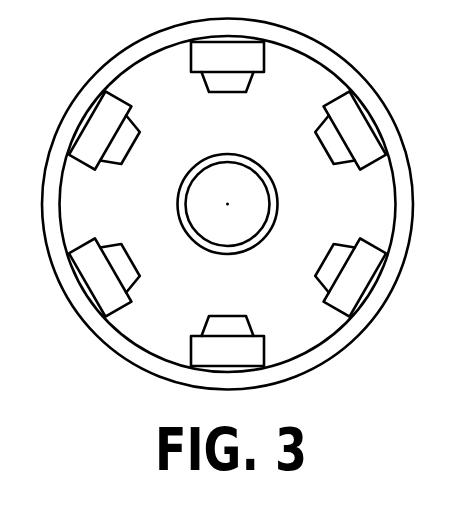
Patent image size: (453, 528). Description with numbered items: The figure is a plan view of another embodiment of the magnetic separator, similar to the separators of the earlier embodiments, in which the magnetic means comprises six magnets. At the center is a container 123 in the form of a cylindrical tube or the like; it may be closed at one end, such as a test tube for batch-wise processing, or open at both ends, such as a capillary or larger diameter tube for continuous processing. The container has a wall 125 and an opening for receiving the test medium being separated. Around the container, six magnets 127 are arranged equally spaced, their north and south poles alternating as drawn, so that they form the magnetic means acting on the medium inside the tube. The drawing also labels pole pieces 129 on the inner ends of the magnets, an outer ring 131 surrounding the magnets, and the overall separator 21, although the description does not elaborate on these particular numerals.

The motor rotor/magnet assembly 21 is at (54, 112).
The container 123 is at (238, 154).
The wall 125 is at (270, 218).
The magnets 127 is at (334, 96).
The pole shoes 129 is at (207, 91).
The outer ring / housing 131 is at (122, 50).